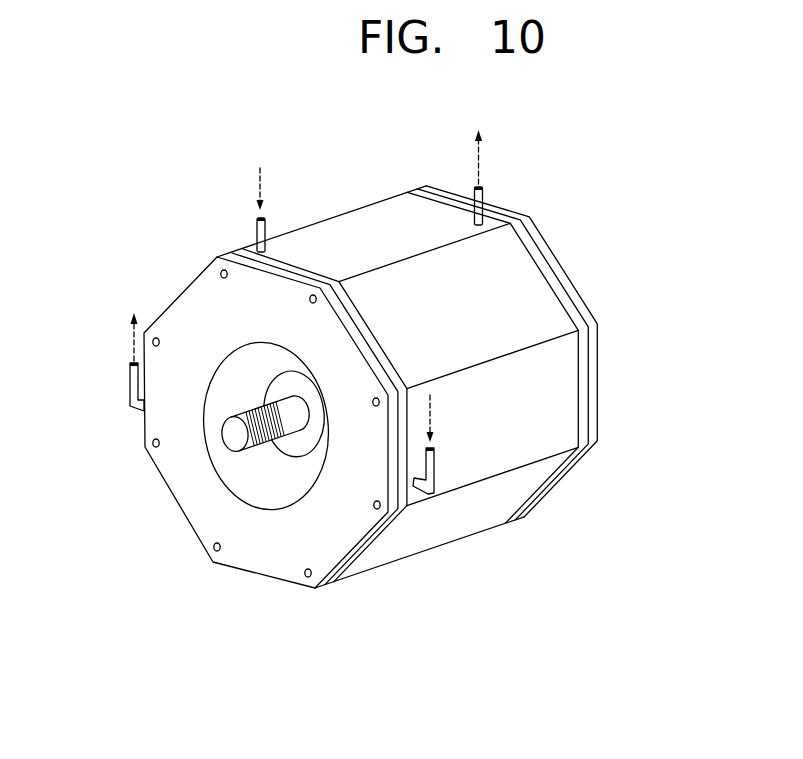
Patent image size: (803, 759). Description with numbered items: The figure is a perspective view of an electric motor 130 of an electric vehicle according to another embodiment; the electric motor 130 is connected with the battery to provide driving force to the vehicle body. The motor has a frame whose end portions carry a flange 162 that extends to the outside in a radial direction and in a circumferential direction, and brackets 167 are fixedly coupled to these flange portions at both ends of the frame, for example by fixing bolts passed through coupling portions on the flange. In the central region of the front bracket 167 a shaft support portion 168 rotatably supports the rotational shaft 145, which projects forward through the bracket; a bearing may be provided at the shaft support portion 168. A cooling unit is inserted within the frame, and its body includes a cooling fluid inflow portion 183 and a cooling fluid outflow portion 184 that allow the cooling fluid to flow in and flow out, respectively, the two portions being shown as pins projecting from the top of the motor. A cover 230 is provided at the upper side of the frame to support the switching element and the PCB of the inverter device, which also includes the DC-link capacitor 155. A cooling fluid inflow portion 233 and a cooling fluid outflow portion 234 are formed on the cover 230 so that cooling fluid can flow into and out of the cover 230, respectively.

The electric motor 130 is at (148, 241).
The rotational shaft 145 is at (232, 438).
The DC-link capacitor 155 is at (478, 513).
The flange 162 is at (588, 402).
The bracket 167 is at (593, 368).
The shaft support portion 168 is at (273, 442).
The cooling fluid inflow portion 183 is at (254, 232).
The cooling fluid outflow portion 184 is at (472, 200).
The cover 230 is at (520, 284).
The cooling fluid inflow portion 233 is at (433, 472).
The cooling fluid outflow portion 234 is at (130, 384).